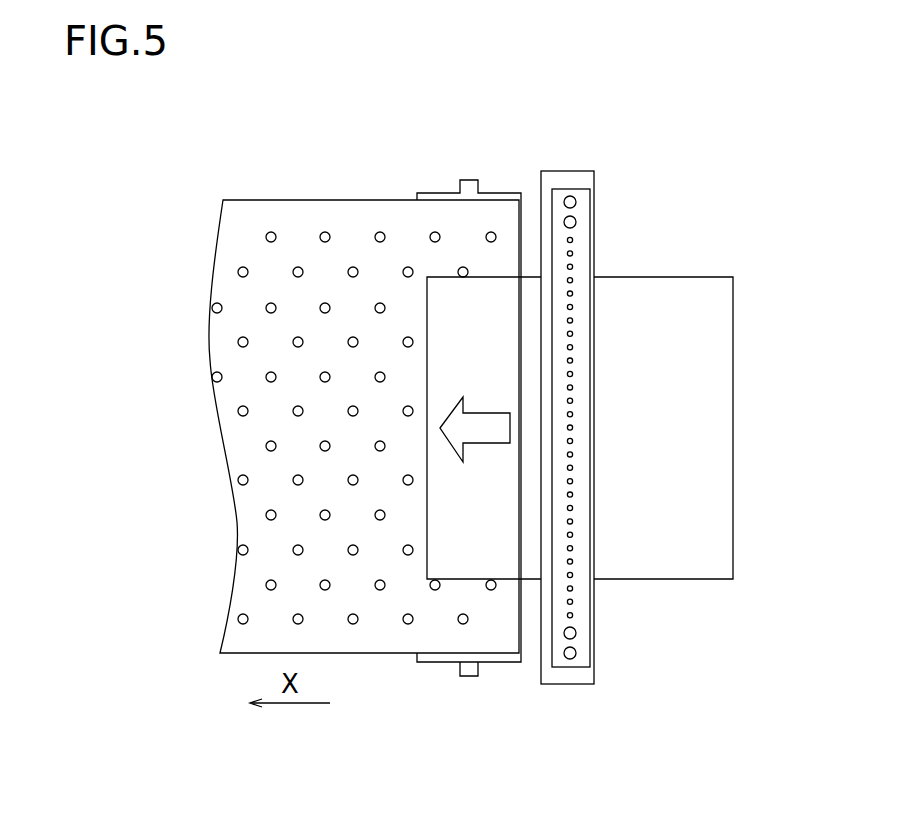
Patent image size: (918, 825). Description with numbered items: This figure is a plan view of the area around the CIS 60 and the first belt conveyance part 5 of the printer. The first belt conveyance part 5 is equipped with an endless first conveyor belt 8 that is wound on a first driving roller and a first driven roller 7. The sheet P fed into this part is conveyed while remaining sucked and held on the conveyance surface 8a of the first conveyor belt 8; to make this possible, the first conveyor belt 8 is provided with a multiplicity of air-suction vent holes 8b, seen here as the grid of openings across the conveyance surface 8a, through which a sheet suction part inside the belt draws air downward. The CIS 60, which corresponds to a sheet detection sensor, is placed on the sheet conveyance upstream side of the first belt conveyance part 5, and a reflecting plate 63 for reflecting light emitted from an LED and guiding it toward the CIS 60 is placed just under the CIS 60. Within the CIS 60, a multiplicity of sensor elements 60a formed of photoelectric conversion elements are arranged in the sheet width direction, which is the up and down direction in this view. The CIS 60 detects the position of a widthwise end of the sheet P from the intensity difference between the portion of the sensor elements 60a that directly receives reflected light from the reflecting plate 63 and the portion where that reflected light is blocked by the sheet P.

The first belt conveyance part 5 is at (251, 176).
The first driven roller 7 is at (443, 192).
The first conveyor belt 8 is at (364, 411).
The conveyance surface 8a is at (311, 226).
The air-suction vent holes 8b is at (380, 591).
The CIS 60 is at (613, 421).
The sensor elements 60a is at (577, 203).
The reflecting plate 63 is at (593, 683).
The sheet P is at (697, 573).